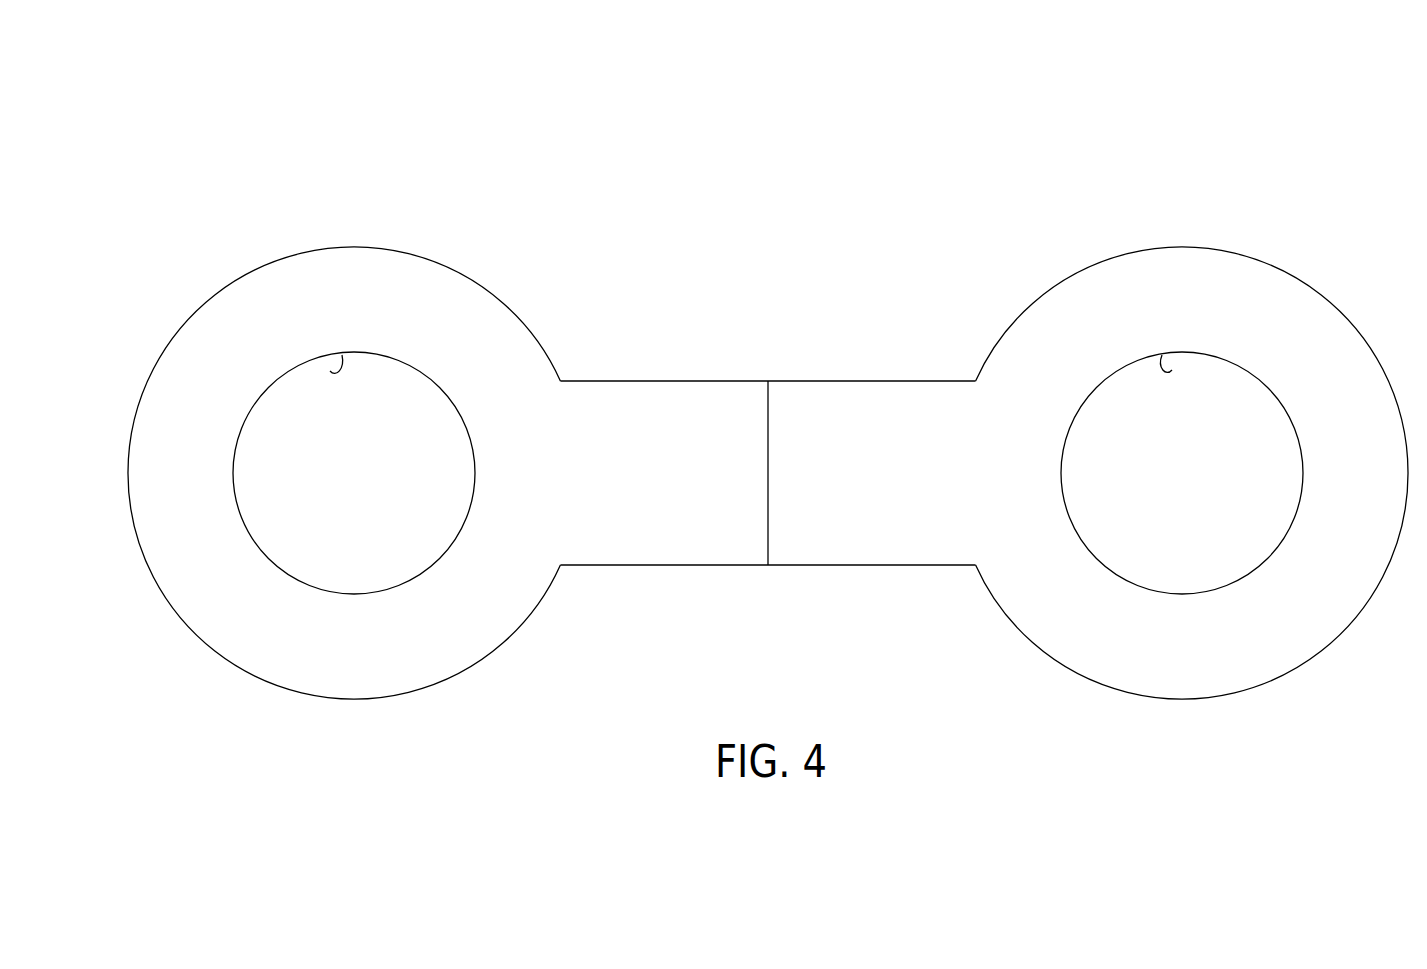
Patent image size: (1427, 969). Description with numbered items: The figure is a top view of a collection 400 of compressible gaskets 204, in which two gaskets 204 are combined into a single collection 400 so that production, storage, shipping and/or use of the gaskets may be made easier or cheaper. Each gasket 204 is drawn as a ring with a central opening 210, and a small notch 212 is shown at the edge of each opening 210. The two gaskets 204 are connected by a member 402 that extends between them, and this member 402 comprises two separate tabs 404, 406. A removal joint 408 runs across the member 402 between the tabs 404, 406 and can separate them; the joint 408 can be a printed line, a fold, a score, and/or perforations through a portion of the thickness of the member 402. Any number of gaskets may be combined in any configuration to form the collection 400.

The collection 400 is at (875, 145).
The gasket 204 is at (362, 278).
The central opening 210 is at (376, 484).
The notch 212 is at (330, 371).
The member 402 is at (702, 378).
The tab 404 is at (807, 532).
The tab 406 is at (654, 532).
The removal joint 408 is at (768, 472).